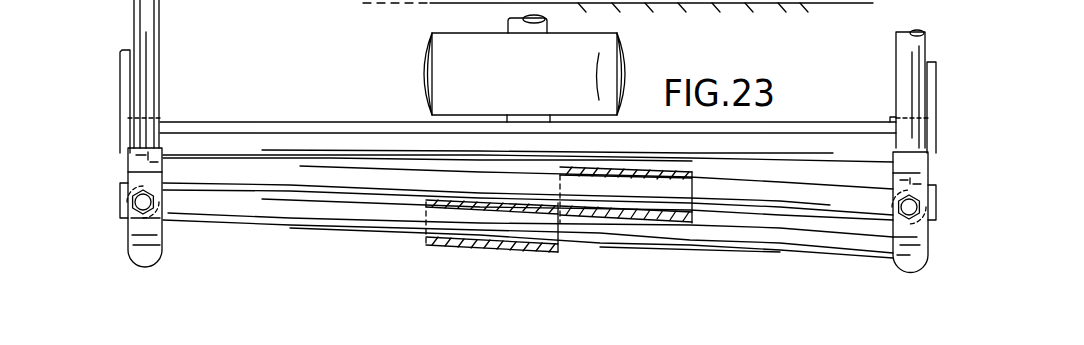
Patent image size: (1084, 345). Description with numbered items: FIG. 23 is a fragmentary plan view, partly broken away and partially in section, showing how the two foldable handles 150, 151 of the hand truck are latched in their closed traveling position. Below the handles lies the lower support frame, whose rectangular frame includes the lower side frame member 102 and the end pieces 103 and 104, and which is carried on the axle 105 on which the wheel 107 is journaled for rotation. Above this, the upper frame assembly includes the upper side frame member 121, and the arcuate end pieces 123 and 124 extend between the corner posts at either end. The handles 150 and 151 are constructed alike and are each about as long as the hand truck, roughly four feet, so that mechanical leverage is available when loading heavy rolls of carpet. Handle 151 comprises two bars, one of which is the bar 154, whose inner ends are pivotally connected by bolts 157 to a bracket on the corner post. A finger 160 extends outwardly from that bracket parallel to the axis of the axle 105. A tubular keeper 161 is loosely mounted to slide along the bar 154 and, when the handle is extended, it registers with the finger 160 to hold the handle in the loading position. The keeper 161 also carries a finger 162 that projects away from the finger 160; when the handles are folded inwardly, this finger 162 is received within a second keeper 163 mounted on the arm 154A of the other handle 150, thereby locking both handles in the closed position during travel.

The lower side frame member 102 is at (272, 116).
The end piece 103 is at (937, 92).
The end piece 104 is at (122, 70).
The axle 105 is at (505, 28).
The wheel 107 is at (423, 60).
The upper side frame member 121 is at (349, 140).
The arcuate end piece 123 is at (896, 56).
The arcuate end piece 124 is at (157, 17).
The foldable handle 150 is at (318, 193).
The foldable handle 151 is at (748, 251).
The bar 154 is at (826, 258).
The arm 154A is at (732, 190).
The bolt 157 is at (140, 212).
The finger 160 is at (132, 258).
The tubular keeper 161 is at (510, 252).
The finger 162 is at (603, 197).
The second keeper 163 is at (650, 220).